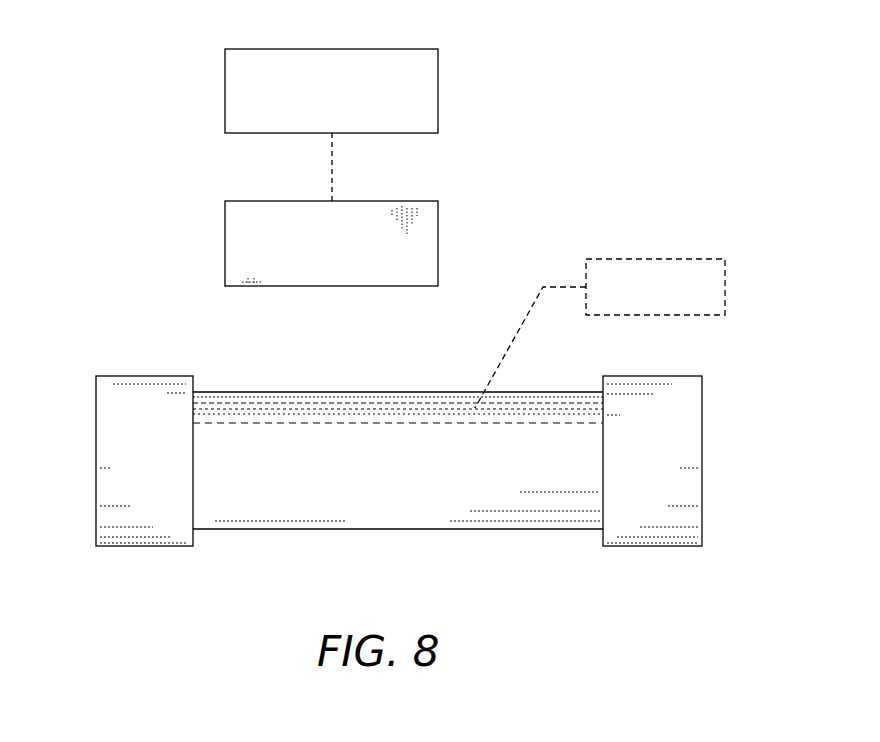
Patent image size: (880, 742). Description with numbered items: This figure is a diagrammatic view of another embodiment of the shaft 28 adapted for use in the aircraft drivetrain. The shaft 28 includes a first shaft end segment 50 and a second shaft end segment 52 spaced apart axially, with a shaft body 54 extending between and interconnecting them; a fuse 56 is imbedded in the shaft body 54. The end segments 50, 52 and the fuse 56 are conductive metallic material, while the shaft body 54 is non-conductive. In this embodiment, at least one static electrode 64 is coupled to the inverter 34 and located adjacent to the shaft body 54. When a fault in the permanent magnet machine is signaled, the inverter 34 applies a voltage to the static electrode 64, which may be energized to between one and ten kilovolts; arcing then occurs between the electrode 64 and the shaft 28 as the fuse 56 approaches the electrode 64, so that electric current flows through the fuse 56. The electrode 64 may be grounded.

The shaft 28 is at (100, 250).
The inverter 34 is at (373, 48).
The first shaft end segment 50 is at (96, 462).
The second shaft end segment 52 is at (702, 462).
The shaft body 54 is at (415, 531).
The fuse 56 is at (705, 258).
The static electrode 64 is at (238, 200).